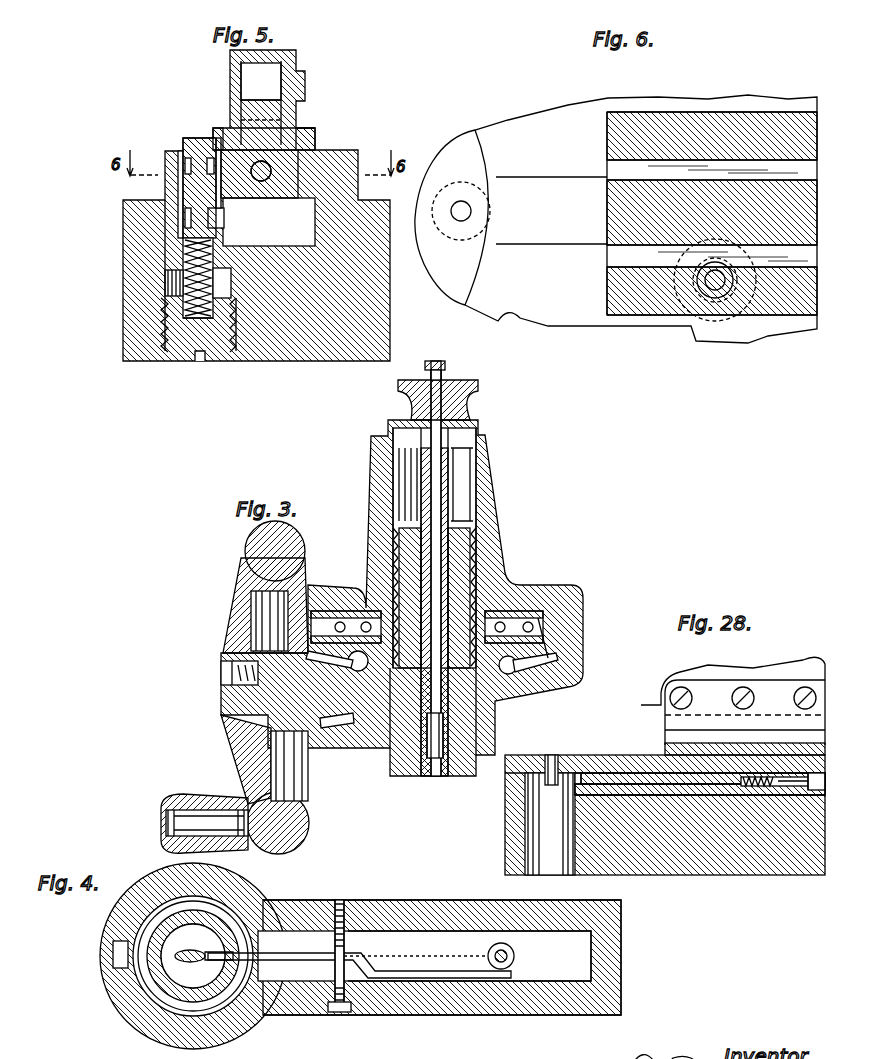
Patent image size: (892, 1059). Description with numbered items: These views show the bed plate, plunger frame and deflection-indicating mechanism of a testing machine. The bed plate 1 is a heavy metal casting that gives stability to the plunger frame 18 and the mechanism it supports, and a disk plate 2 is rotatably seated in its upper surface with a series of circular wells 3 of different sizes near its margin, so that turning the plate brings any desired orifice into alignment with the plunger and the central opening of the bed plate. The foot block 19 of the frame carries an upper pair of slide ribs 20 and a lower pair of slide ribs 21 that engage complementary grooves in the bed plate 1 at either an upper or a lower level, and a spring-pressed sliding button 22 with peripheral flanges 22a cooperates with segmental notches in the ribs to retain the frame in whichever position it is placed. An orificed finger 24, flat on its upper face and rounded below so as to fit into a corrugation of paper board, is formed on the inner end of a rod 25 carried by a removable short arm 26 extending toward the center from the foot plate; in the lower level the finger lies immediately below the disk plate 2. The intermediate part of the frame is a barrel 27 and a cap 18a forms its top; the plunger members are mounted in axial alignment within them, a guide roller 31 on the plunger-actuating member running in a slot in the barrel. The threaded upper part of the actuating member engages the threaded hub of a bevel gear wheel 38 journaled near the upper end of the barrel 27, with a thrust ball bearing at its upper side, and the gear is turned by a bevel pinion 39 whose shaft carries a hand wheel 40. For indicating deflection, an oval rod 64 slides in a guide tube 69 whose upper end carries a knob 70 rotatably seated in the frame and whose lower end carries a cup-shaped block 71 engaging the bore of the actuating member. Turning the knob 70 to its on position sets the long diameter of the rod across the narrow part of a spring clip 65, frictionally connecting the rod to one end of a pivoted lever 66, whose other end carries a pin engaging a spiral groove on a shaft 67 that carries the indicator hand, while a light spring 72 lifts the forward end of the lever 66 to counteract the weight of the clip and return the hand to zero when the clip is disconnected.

In FIG. 5, the bed plate 1 is at (115, 313).
In FIG. 6, the bed plate 1 is at (518, 110).
In FIG. 28, the bed plate 1 is at (700, 860).
In FIG. 6, the disk plate 2 is at (436, 278).
In FIG. 28, the disk plate 2 is at (500, 762).
In FIG. 6, the circular wells 3 is at (452, 212).
In FIG. 28, the circular wells 3 is at (545, 757).
In FIG. 4, the plunger frame 18 is at (432, 886).
In FIG. 3, the cap 18a is at (362, 570).
In FIG. 5, the plate 19 is at (300, 150).
In FIG. 6, the plate 19 is at (700, 185).
In FIG. 28, the plate 19 is at (712, 680).
In FIG. 5, the upper slide ribs 20 is at (213, 120).
In FIG. 28, the upper slide ribs 20 is at (690, 730).
In FIG. 5, the lower slide ribs 21 is at (287, 196).
In FIG. 6, the lower slide ribs 21 is at (615, 250).
In FIG. 28, the lower slide ribs 21 is at (748, 730).
In FIG. 5, the spring-pressed sliding button 22 is at (190, 130).
In FIG. 6, the spring-pressed sliding button 22 is at (710, 292).
In FIG. 5, the peripheral flanges 22a is at (160, 165).
In FIG. 6, the peripheral flanges 22a is at (697, 283).
In FIG. 28, the orificed finger 24 is at (555, 782).
In FIG. 28, the rod 25 is at (623, 757).
In FIG. 28, the short arm 26 is at (600, 752).
In FIG. 3, the barrel 27 is at (372, 753).
In FIG. 4, the barrel 27 is at (140, 1020).
In FIG. 4, the guide roller 31 is at (105, 950).
In FIG. 3, the bevel gear wheel 38 is at (522, 662).
In FIG. 3, the bevel pinion 39 is at (338, 724).
In FIG. 3, the hand wheel 40 is at (228, 748).
In FIG. 3, the oval rod 64 is at (430, 553).
In FIG. 4, the oval rod 64 is at (190, 944).
In FIG. 3, the spring clip 65 is at (440, 731).
In FIG. 4, the spring clip 65 is at (206, 971).
In FIG. 4, the pivoted lever 66 is at (297, 945).
In FIG. 4, the shaft 67 is at (507, 949).
In FIG. 3, the guide tube 69 is at (436, 486).
In FIG. 3, the knob 70 is at (464, 387).
In FIG. 3, the cup-shaped block 71 is at (490, 690).
In FIG. 4, the light spring 72 is at (310, 960).